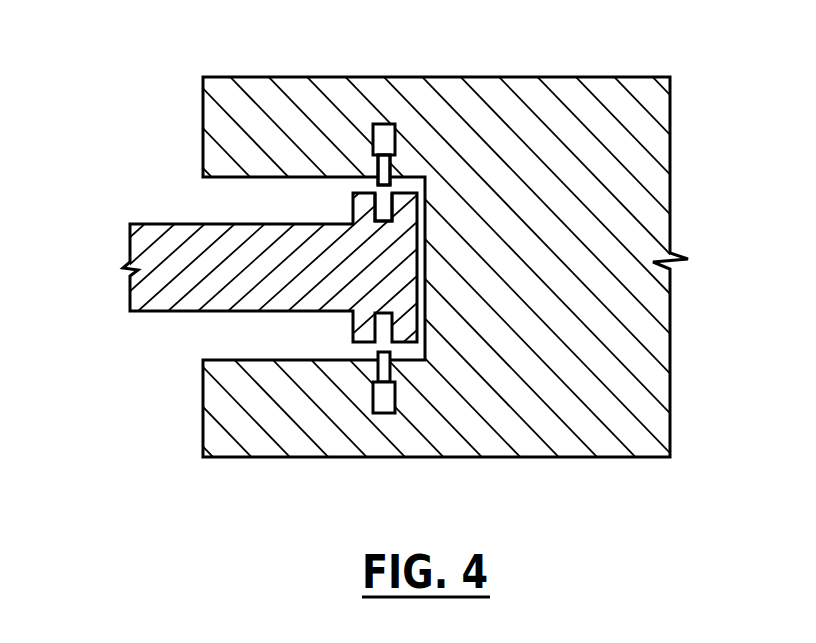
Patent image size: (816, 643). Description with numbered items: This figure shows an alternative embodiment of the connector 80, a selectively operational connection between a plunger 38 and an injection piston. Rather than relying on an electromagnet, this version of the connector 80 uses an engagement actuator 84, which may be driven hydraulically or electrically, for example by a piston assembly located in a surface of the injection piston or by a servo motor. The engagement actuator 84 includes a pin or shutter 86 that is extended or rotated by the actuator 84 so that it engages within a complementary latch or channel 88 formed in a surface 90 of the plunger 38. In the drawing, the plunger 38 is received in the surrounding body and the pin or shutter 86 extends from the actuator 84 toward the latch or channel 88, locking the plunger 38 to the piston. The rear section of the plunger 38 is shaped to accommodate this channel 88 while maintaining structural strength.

The plunger 38 is at (173, 247).
The connector 80 is at (288, 331).
The engagement actuator 84 is at (383, 127).
The pin or shutter 86 is at (391, 171).
The latch or channel 88 is at (396, 323).
The surface of the plunger 90 is at (365, 190).